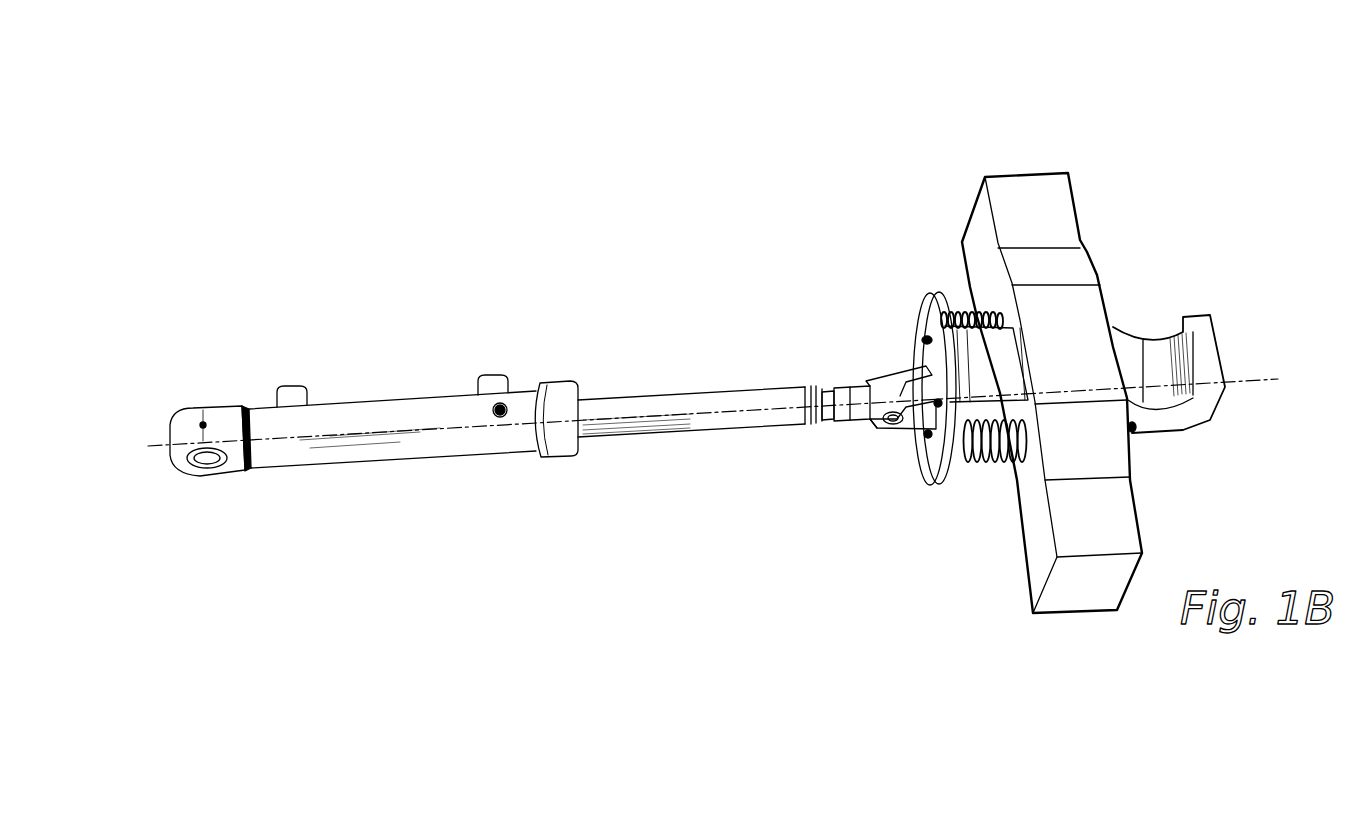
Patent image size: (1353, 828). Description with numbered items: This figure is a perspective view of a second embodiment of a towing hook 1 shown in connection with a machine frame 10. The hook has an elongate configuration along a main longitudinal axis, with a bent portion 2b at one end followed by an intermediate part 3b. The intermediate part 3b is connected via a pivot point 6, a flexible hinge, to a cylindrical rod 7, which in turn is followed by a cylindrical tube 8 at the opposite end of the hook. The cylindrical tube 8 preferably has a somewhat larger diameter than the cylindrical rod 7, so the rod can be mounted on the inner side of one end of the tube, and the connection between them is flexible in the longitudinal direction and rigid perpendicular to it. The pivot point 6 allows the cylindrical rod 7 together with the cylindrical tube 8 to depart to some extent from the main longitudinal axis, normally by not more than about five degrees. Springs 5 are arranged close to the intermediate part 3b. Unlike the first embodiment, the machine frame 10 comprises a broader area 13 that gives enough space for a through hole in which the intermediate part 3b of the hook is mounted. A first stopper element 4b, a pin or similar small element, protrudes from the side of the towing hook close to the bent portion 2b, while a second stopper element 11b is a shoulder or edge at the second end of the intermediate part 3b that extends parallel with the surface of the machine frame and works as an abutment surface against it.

The towing hook 1 is at (726, 373).
The bent portion 2b is at (1210, 400).
The intermediate part 3b is at (1003, 360).
The first stopper element 4b is at (1134, 433).
The springs 5 is at (990, 464).
The pivot point 6 is at (892, 440).
The cylindrical rod 7 is at (696, 400).
The cylindrical tube 8 is at (420, 407).
The machine frame 10 is at (1080, 593).
The second stopper element 11b is at (922, 340).
The broader area 13 is at (1085, 360).